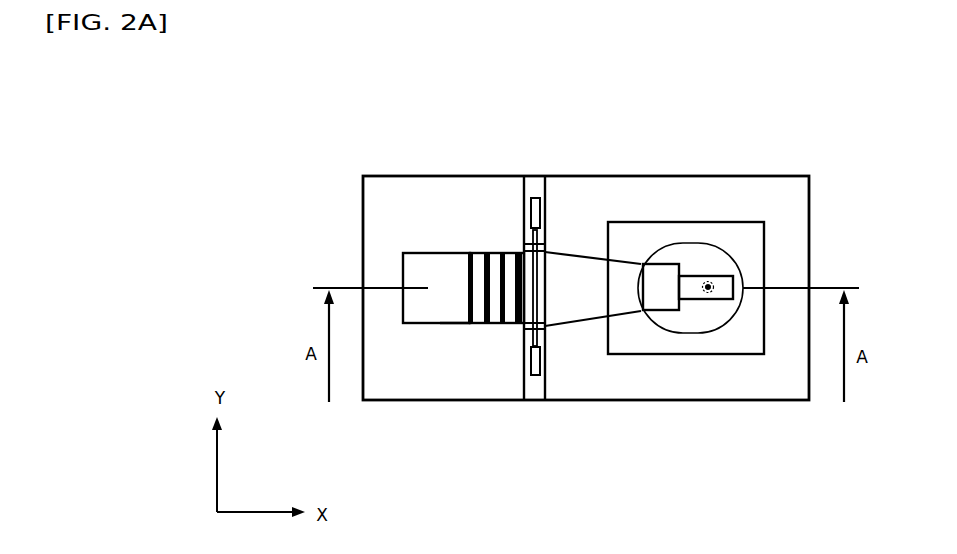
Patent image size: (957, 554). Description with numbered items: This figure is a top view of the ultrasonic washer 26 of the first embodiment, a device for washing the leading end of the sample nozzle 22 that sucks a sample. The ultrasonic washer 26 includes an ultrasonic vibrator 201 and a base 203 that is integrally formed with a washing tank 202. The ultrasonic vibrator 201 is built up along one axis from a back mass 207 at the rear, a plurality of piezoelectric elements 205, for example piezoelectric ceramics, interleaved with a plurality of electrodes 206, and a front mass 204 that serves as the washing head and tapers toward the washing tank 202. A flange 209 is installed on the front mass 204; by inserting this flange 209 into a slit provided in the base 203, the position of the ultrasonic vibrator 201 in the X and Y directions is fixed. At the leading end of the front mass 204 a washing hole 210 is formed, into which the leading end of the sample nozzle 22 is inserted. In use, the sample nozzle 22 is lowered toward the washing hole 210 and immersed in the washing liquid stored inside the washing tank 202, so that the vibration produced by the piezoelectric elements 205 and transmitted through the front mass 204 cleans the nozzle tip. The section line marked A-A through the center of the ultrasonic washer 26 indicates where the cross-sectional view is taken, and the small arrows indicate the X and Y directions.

The ultrasonic washer 26 is at (875, 253).
The ultrasonic vibrator 201 is at (508, 243).
The washing tank 202 is at (685, 243).
The base 203 is at (772, 402).
The front mass 204 is at (572, 255).
The piezoelectric elements 205 is at (477, 252).
The electrodes 206 is at (468, 323).
The back mass 207 is at (423, 252).
The flange 209 is at (529, 343).
The washing hole 210 is at (709, 284).
The sample nozzle 22 is at (708, 291).